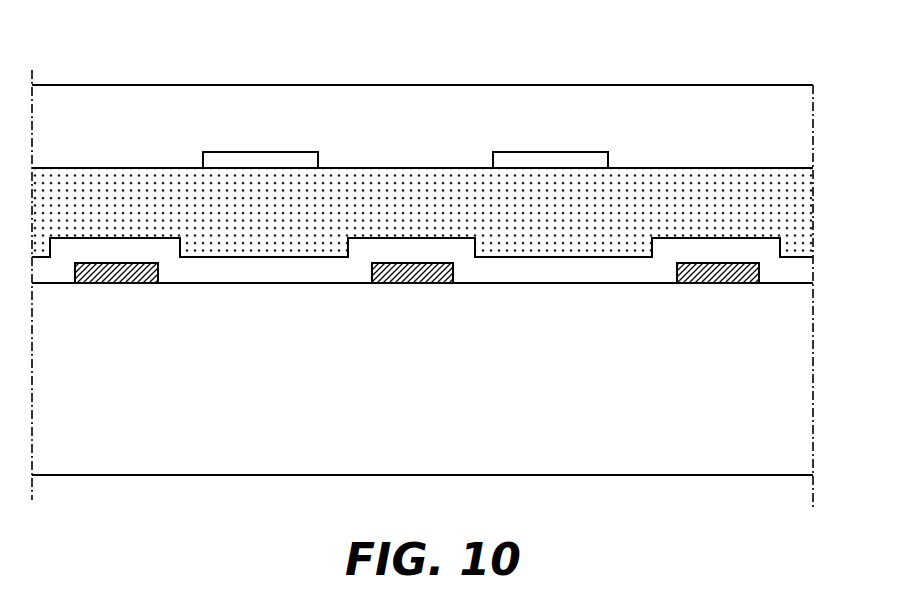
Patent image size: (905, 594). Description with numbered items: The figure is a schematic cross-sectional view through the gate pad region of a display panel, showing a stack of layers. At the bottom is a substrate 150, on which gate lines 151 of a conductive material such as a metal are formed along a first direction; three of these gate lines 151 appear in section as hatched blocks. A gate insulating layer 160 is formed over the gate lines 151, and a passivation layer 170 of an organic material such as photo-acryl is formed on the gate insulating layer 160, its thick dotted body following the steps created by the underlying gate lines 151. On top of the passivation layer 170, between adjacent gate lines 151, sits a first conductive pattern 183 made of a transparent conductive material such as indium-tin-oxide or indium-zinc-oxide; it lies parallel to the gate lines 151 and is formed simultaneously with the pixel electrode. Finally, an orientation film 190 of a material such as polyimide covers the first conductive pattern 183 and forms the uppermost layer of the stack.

The substrate 150 is at (280, 442).
The gate lines 151 is at (113, 283).
The gate insulating layer 160 is at (565, 273).
The passivation layer 170 is at (153, 188).
The first conductive pattern 183 is at (287, 162).
The orientation film 190 is at (412, 128).